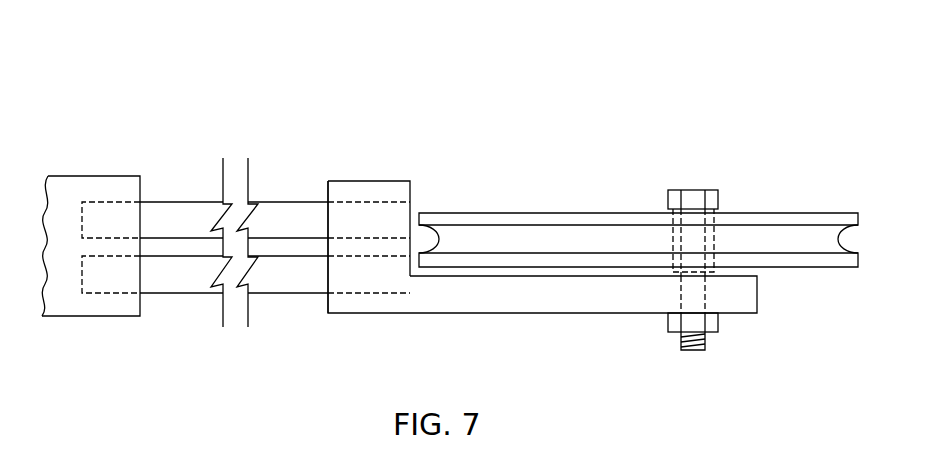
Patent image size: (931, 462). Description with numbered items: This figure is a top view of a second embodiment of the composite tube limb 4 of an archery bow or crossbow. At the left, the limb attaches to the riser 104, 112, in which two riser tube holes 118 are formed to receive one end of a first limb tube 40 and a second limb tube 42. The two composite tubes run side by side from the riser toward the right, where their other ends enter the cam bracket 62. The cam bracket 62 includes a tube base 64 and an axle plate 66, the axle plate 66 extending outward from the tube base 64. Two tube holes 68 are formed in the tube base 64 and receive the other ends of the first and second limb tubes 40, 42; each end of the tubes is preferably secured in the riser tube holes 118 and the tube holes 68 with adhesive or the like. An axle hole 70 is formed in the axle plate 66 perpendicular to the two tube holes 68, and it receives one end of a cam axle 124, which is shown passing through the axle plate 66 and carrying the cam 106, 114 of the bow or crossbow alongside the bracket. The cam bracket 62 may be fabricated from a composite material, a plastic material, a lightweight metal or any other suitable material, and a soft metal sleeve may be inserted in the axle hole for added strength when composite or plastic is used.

The composite tube limb 4 is at (512, 132).
The first limb tube 40 is at (183, 201).
The second limb tube 42 is at (277, 298).
The cam bracket 62 is at (346, 209).
The tube base 64 is at (338, 181).
The axle plate 66 is at (512, 313).
The tube holes 68 is at (377, 201).
The axle hole 70 is at (707, 294).
The riser 104 is at (99, 280).
The riser 112 is at (100, 317).
The cams 106 is at (638, 194).
The cams 114 is at (802, 212).
The riser tube holes 118 is at (102, 200).
The cam axle 124 is at (693, 198).